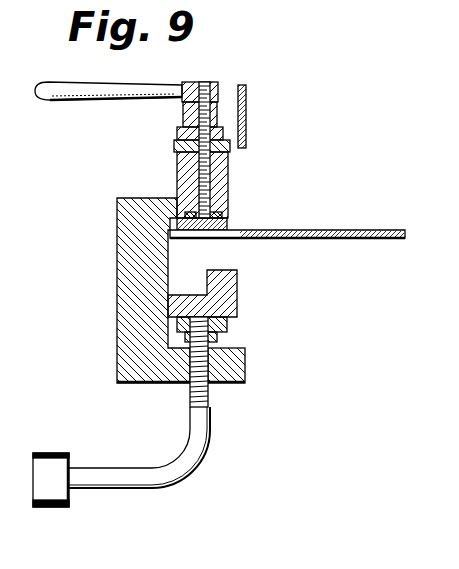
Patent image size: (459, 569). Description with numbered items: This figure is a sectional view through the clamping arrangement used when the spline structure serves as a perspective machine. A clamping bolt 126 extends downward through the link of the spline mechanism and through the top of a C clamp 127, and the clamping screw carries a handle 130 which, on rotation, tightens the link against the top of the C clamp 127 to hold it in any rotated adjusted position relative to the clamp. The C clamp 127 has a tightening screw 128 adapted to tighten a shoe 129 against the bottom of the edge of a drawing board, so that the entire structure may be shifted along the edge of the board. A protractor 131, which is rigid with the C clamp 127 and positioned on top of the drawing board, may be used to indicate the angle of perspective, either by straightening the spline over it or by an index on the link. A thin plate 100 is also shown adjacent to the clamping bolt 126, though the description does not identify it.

The plate 100 is at (247, 101).
The clamping bolt 126 is at (228, 188).
The C clamp 127 is at (130, 320).
The tightening screw 128 is at (204, 423).
The shoe 129 is at (222, 294).
The handle 130 is at (104, 88).
The protractor 131 is at (270, 231).